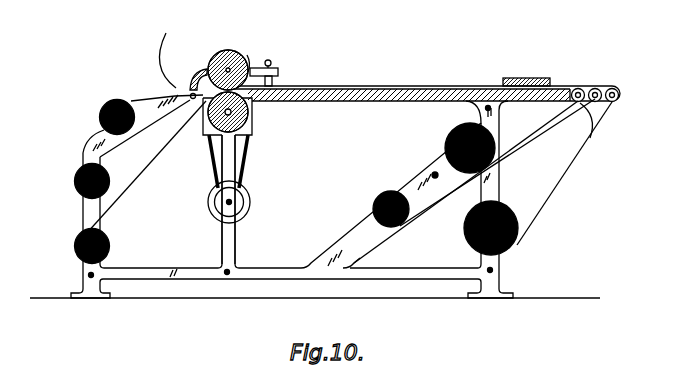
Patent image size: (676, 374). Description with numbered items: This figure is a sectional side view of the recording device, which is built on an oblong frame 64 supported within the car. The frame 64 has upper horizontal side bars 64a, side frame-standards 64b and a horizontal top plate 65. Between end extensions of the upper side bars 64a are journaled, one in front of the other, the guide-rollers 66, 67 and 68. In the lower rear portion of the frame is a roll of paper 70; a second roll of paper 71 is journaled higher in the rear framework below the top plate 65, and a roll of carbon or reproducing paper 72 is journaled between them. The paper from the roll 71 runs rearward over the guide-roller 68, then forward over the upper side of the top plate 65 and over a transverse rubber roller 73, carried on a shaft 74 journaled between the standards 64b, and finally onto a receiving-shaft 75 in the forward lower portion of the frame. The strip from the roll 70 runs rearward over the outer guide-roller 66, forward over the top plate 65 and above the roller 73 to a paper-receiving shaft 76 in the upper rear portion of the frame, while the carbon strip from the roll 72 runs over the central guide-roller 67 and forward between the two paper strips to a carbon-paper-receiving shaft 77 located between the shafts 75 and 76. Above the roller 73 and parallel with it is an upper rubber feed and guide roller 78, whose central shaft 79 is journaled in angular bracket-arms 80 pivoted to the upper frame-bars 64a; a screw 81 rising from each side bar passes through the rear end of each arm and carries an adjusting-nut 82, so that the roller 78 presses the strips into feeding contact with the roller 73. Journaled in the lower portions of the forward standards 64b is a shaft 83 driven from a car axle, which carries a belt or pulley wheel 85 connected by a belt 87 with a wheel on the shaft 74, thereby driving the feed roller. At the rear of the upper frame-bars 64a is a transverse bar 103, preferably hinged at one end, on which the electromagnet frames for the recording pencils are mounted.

The oblong frame 64 is at (173, 268).
The upper horizontal side bars 64a is at (176, 58).
The side frame-standards 64b is at (236, 242).
The top plate 65 is at (347, 102).
The guide-roller 66 is at (620, 95).
The guide-roller 67 is at (602, 102).
The guide-roller 68 is at (590, 133).
The roll of paper 70 is at (137, 98).
The second roll of paper 71 is at (395, 87).
The roll of carbon or reproducing paper 72 is at (130, 137).
The transverse roller of rubber 73 is at (210, 126).
The shaft 74 is at (232, 111).
The receiving-shaft 75 is at (75, 248).
The paper-receiving shaft 76 is at (100, 118).
The carbon-paper-receiving shaft 77 is at (74, 181).
The upper feed and guide roller 78 is at (247, 54).
The central shaft 79 is at (229, 71).
The angular bracket-arms 80 is at (204, 68).
The screw 81 is at (279, 75).
The adjusting-nut 82 is at (272, 62).
The shaft 83 is at (232, 200).
The belt or pulley wheel 85 is at (246, 203).
The belt 87 is at (248, 152).
The transverse bar 103 is at (546, 79).